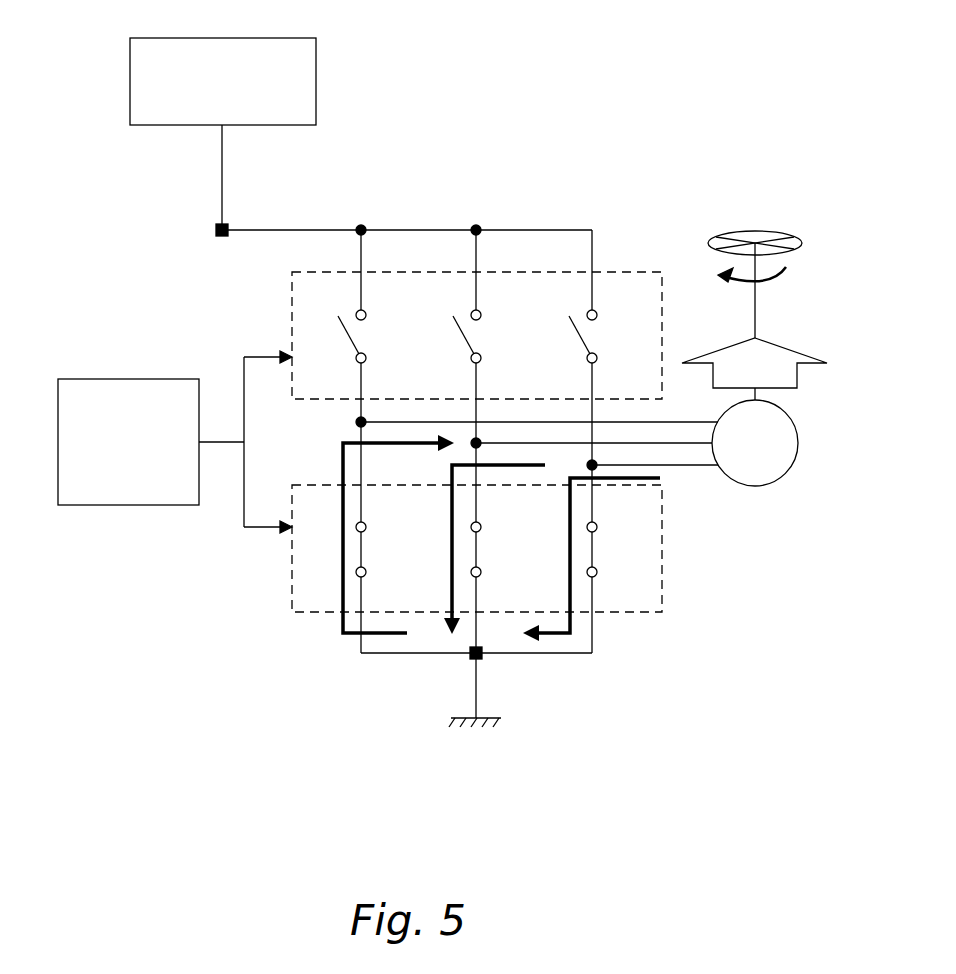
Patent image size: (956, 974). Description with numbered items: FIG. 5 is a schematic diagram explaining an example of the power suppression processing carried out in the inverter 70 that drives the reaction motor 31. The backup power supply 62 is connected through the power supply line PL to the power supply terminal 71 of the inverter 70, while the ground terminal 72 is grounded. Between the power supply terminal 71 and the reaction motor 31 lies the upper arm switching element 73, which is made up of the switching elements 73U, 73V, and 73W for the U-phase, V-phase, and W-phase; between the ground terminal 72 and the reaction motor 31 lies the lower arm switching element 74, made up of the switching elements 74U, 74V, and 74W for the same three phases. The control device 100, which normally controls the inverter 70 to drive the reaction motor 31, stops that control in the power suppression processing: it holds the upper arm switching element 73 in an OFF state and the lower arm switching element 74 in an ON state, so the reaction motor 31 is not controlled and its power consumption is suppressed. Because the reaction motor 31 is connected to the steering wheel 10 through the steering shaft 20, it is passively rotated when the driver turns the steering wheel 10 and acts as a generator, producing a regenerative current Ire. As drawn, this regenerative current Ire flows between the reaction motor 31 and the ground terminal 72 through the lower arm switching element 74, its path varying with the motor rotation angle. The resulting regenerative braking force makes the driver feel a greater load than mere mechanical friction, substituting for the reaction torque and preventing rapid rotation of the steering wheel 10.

The steering wheel 10 is at (755, 232).
The steering shaft 20 is at (757, 312).
The reaction motor 31 is at (758, 487).
The backup power supply 62 is at (170, 38).
The inverter 70 is at (326, 662).
The power supply terminal 71 is at (216, 227).
The ground terminal 72 is at (472, 658).
The upper arm switching element 73 is at (292, 322).
The U-phase upper arm switching element 73U is at (374, 326).
The V-phase upper arm switching element 73V is at (489, 336).
The W-phase upper arm switching element 73W is at (607, 347).
The lower arm switching element 74 is at (292, 578).
The U-phase lower arm switching element 74U is at (383, 537).
The V-phase lower arm switching element 74V is at (498, 548).
The W-phase lower arm switching element 74W is at (616, 559).
The control device 100 is at (103, 379).
The power supply line PL is at (220, 164).
The regenerative current Ire is at (556, 642).